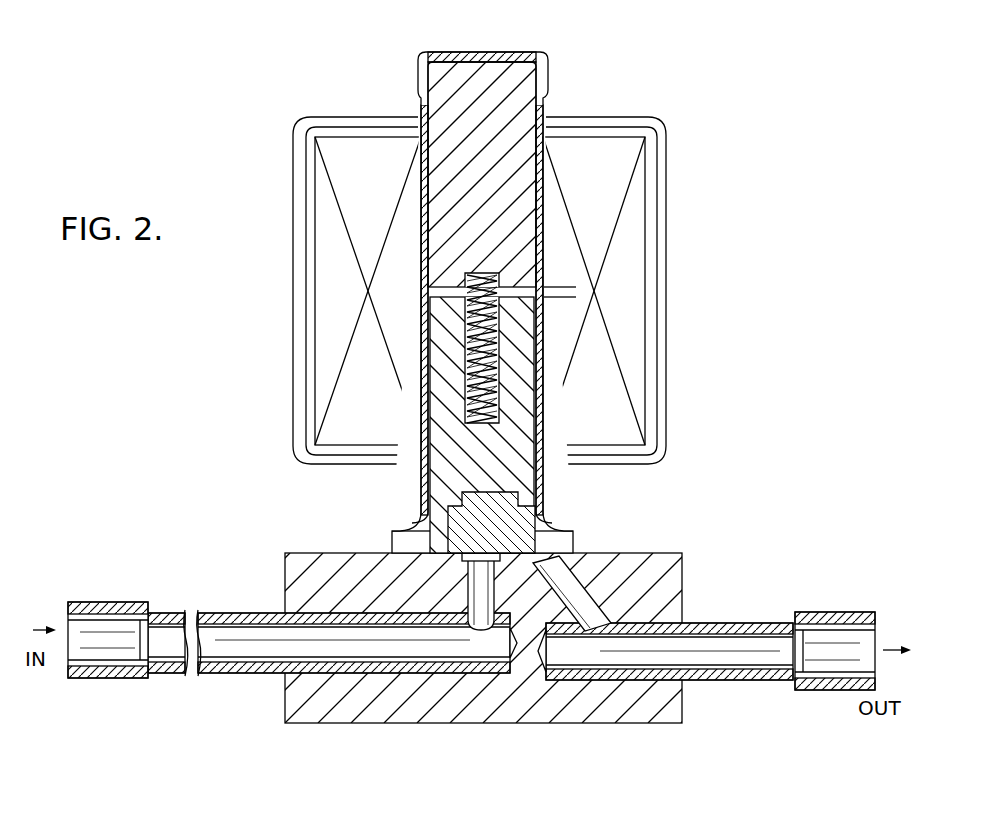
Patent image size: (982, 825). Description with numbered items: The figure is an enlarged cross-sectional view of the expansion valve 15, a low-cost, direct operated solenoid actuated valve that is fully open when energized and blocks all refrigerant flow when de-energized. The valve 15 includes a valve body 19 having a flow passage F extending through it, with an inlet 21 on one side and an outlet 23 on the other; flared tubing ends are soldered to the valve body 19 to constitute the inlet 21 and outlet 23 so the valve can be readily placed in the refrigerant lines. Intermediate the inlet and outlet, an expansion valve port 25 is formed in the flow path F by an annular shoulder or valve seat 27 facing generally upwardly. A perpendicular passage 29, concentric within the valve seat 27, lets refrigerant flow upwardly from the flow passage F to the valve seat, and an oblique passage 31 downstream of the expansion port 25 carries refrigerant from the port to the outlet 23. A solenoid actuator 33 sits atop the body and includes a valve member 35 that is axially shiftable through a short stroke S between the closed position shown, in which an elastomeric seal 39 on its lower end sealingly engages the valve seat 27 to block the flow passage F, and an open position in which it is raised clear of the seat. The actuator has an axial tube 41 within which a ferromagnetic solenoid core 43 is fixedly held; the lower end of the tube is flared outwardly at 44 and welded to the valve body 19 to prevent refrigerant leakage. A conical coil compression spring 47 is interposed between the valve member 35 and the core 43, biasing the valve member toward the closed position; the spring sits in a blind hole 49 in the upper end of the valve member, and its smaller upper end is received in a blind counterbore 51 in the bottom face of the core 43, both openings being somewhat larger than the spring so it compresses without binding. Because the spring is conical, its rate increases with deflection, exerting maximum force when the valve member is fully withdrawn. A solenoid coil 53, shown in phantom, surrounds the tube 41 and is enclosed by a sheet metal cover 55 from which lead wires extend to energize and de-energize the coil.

The expansion valve 15 is at (706, 460).
The valve body 19 is at (600, 723).
The inlet 21 is at (110, 656).
The outlet 23 is at (820, 676).
The expansion valve port 25 is at (526, 564).
The valve seat 27 is at (395, 538).
The perpendicular passage 29 is at (470, 592).
The oblique passage 31 is at (582, 590).
The solenoid actuator 33 is at (671, 139).
The valve member 35 is at (520, 424).
The elastomeric seal 39 is at (487, 522).
The axial tube 41 is at (545, 57).
The solenoid core 43 is at (537, 99).
The flared end 44 is at (403, 510).
The conical coil compression spring 47 is at (490, 333).
The blind hole 49 is at (476, 326).
The blind counterbore 51 is at (480, 277).
The solenoid coil 53 is at (647, 302).
The sheet metal cover 55 is at (293, 150).
The stroke S is at (564, 312).
The flow passage F is at (440, 650).